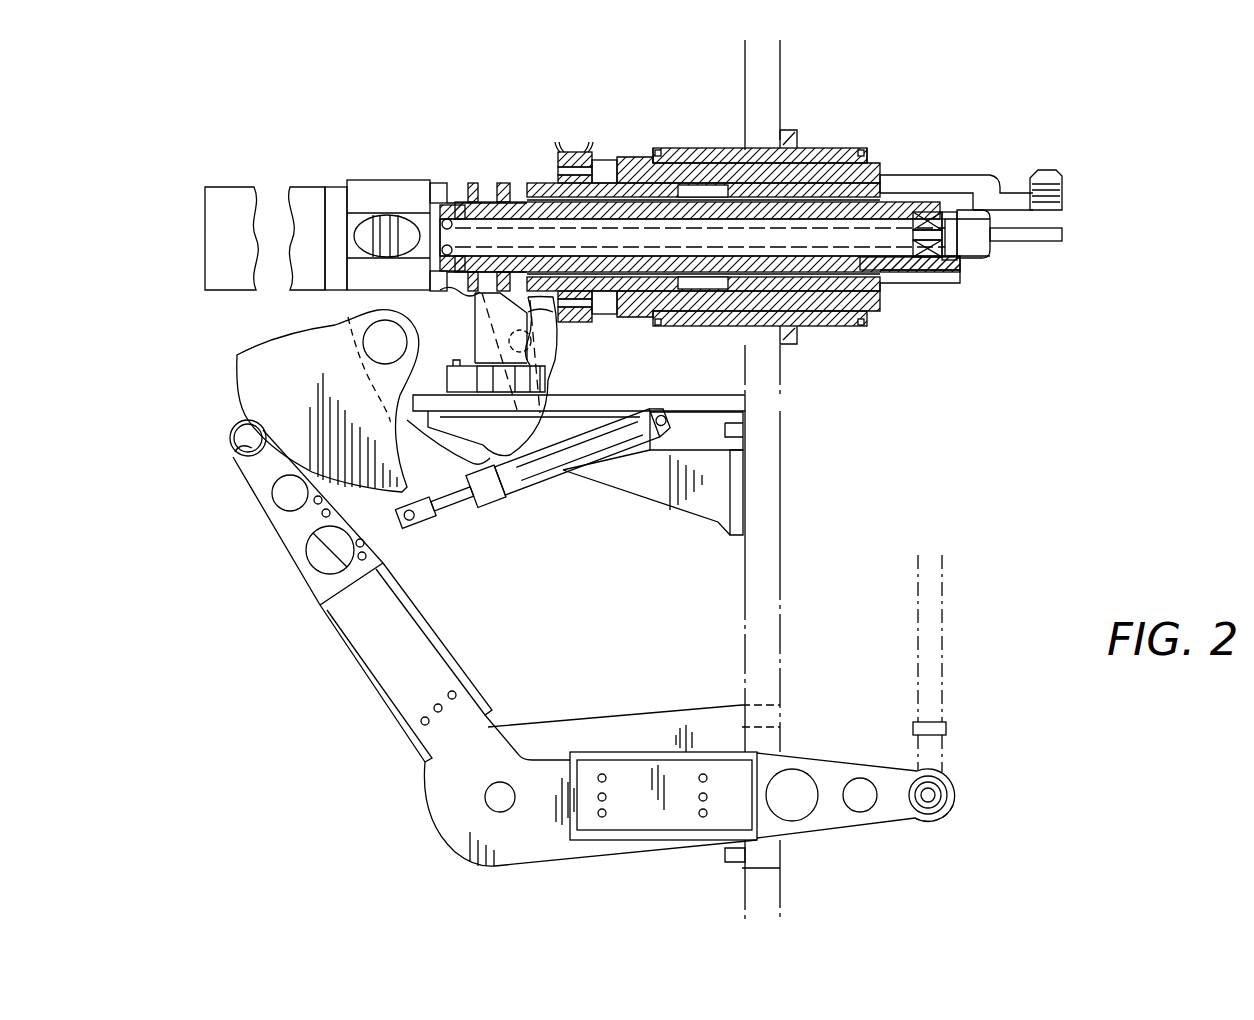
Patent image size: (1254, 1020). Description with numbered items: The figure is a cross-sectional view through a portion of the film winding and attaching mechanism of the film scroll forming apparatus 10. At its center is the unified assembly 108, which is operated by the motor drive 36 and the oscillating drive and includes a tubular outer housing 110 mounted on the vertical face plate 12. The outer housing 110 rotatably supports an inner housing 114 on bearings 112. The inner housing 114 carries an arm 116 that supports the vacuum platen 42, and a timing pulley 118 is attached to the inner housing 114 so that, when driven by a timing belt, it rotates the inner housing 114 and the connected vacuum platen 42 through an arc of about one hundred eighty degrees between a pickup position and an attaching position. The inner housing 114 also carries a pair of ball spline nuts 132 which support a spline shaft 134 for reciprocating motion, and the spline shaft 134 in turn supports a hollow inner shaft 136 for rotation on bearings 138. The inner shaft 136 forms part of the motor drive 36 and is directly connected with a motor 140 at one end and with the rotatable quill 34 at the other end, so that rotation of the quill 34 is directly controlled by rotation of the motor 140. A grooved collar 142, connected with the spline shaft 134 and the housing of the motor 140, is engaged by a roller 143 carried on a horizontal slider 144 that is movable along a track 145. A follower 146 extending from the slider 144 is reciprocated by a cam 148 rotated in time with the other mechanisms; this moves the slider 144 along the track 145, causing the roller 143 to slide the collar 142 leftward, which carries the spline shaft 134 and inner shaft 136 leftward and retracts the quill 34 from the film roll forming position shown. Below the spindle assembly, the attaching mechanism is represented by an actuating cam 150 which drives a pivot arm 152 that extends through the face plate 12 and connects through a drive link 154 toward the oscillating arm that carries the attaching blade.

The film scroll forming apparatus 10 is at (372, 832).
The face plate 12 is at (782, 568).
The quill 34 is at (1015, 243).
The motor drive 36 is at (347, 172).
The vacuum platen 42 is at (1034, 170).
The unified assembly 108 is at (792, 336).
The tubular outer housing 110 is at (832, 147).
The bearings 112 is at (658, 160).
The inner housing 114 is at (628, 156).
The arm 116 is at (948, 174).
The timing pulley 118 is at (567, 148).
The ball spline nuts 132 is at (528, 183).
The spline shaft 134 is at (912, 262).
The hollow inner shaft 136 is at (885, 272).
The bearings 138 is at (446, 218).
The motor 140 is at (236, 186).
The grooved collar 142 is at (465, 180).
The roller 143 is at (460, 292).
The horizontal slider 144 is at (490, 330).
The track 145 is at (448, 366).
The follower 146 is at (553, 352).
The cam 148 is at (556, 320).
The actuating cam 150 is at (240, 397).
The pivot arm 152 is at (422, 740).
The drive link 154 is at (915, 690).